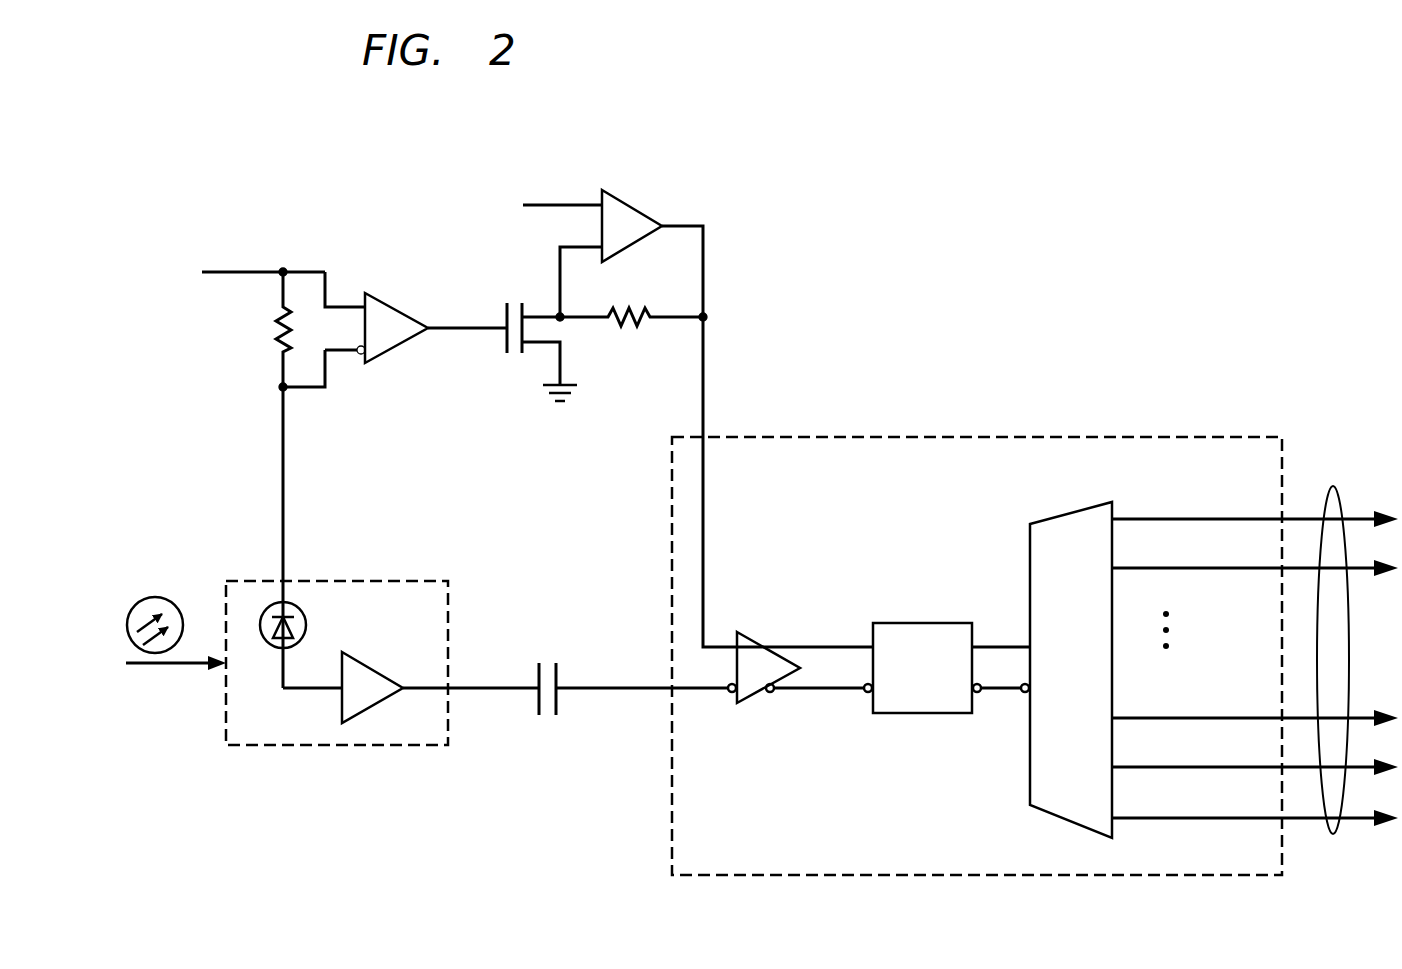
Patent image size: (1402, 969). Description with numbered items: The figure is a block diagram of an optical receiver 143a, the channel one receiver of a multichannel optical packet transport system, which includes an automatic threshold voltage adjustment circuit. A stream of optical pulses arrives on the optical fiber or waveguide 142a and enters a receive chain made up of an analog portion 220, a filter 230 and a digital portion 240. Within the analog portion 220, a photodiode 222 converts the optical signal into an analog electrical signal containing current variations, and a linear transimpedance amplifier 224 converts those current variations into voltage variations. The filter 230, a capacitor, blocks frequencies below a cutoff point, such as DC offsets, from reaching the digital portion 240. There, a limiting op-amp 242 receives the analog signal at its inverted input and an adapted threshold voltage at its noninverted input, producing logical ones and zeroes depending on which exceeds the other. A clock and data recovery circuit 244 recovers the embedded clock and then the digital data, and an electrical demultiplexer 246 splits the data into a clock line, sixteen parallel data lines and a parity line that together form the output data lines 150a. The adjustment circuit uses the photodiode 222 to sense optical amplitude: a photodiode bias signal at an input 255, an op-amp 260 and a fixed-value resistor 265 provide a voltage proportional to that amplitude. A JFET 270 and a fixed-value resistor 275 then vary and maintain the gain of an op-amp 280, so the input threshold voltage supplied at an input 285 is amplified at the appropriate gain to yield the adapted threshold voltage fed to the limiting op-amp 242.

The optical receiver 143a is at (1010, 222).
The optical fiber or waveguide 142a is at (170, 665).
The output data lines 150a is at (1332, 500).
The analog portion 220 is at (380, 581).
The photodiode 222 is at (308, 627).
The linear transimpedance amplifier 224 is at (372, 654).
The filter 230 is at (558, 670).
The digital portion 240 is at (898, 437).
The limiting op-amp 242 is at (750, 637).
The clock and data recovery circuit 244 is at (900, 623).
The electrical demultiplexer 246 is at (1067, 512).
The input 255 is at (256, 268).
The op-amp 260 is at (390, 302).
The fixed-value resistor 265 is at (270, 330).
The JFET 270 is at (500, 341).
The fixed-value resistor 275 is at (635, 330).
The op-amp 280 is at (632, 207).
The input 285 is at (552, 203).